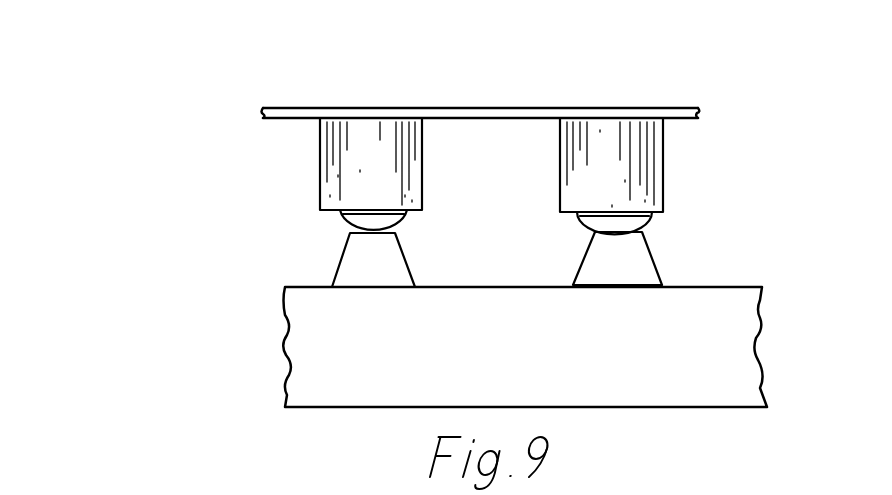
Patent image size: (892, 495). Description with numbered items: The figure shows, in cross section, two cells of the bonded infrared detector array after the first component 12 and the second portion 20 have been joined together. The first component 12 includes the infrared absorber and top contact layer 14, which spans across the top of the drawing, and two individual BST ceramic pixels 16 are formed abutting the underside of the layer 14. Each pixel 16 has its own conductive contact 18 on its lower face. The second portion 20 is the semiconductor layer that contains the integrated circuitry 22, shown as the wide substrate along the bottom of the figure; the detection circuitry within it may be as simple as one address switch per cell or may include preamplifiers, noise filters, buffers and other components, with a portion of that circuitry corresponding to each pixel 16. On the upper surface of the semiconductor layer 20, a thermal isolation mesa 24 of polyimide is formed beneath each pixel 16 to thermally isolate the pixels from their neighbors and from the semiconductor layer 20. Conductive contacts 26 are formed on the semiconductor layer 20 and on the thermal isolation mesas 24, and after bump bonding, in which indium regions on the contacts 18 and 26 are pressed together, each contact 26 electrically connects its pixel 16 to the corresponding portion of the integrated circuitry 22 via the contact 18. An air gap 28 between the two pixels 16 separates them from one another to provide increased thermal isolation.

The first component 12 is at (436, 130).
The infrared absorber and top contact layer 14 is at (481, 59).
The BST ceramic pixel 16 is at (546, 165).
The conductive contact 18 is at (434, 235).
The second portion 20 is at (434, 311).
The integrated circuitry 22 is at (525, 347).
The thermal isolation mesa 24 is at (297, 275).
The conductive contact 26 is at (678, 241).
The air gap 28 is at (494, 199).